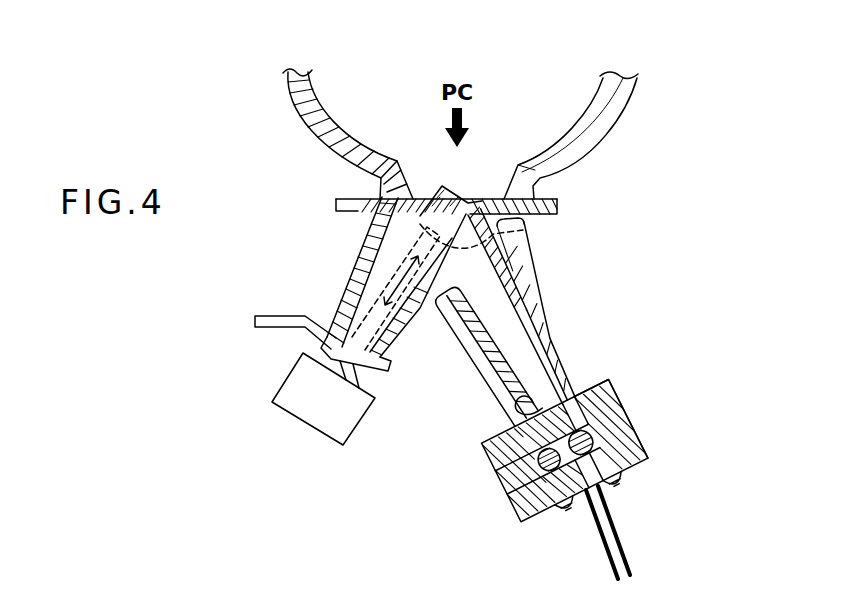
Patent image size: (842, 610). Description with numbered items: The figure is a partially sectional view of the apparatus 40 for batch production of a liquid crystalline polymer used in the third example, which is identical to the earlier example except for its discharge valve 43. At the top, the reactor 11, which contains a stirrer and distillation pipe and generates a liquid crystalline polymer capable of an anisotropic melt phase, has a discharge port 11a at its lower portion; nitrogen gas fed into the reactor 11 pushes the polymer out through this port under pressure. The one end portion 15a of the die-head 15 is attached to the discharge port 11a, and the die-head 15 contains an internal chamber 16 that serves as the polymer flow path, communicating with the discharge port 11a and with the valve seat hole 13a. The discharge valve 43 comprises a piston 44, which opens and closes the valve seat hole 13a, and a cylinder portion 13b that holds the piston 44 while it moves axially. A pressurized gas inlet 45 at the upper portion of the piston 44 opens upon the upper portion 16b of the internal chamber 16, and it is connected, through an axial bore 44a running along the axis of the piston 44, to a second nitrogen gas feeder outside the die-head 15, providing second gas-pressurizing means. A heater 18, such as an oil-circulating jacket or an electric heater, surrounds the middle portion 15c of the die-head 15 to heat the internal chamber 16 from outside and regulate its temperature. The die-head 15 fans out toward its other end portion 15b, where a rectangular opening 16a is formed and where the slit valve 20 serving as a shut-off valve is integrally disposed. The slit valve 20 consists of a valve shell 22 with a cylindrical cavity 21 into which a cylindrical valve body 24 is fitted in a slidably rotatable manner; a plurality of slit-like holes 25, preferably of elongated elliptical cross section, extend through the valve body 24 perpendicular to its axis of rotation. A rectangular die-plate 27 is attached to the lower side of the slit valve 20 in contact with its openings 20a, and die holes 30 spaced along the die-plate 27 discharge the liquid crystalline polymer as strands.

The reactor 11 is at (600, 132).
The discharge port 11a is at (418, 197).
The valve seat hole 13a is at (470, 197).
The cylinder portion 13b is at (330, 300).
The die-head 15 is at (557, 298).
The one end portion 15a is at (350, 224).
The other end portion 15b is at (607, 383).
The middle portion 15c is at (462, 342).
The internal chamber 16 is at (538, 357).
The opening 16a is at (512, 402).
The upper portion of the internal chamber 16b is at (520, 286).
The heater 18 is at (526, 262).
The slit valve 20 is at (640, 418).
The openings of the slit valve 20a is at (572, 520).
The cylindrical cavity 21 is at (498, 471).
The valve shell 22 is at (514, 497).
The valve body 24 is at (522, 497).
The holes 25 is at (598, 447).
The die-plate 27 is at (612, 491).
The die holes 30 is at (604, 504).
The apparatus for batch production of a liquid crystalline polymer 40 is at (657, 125).
The discharge valve 43 is at (345, 283).
The piston 44 is at (372, 252).
The axial bore 44a is at (366, 362).
The pressurized gas inlet 45 is at (522, 236).